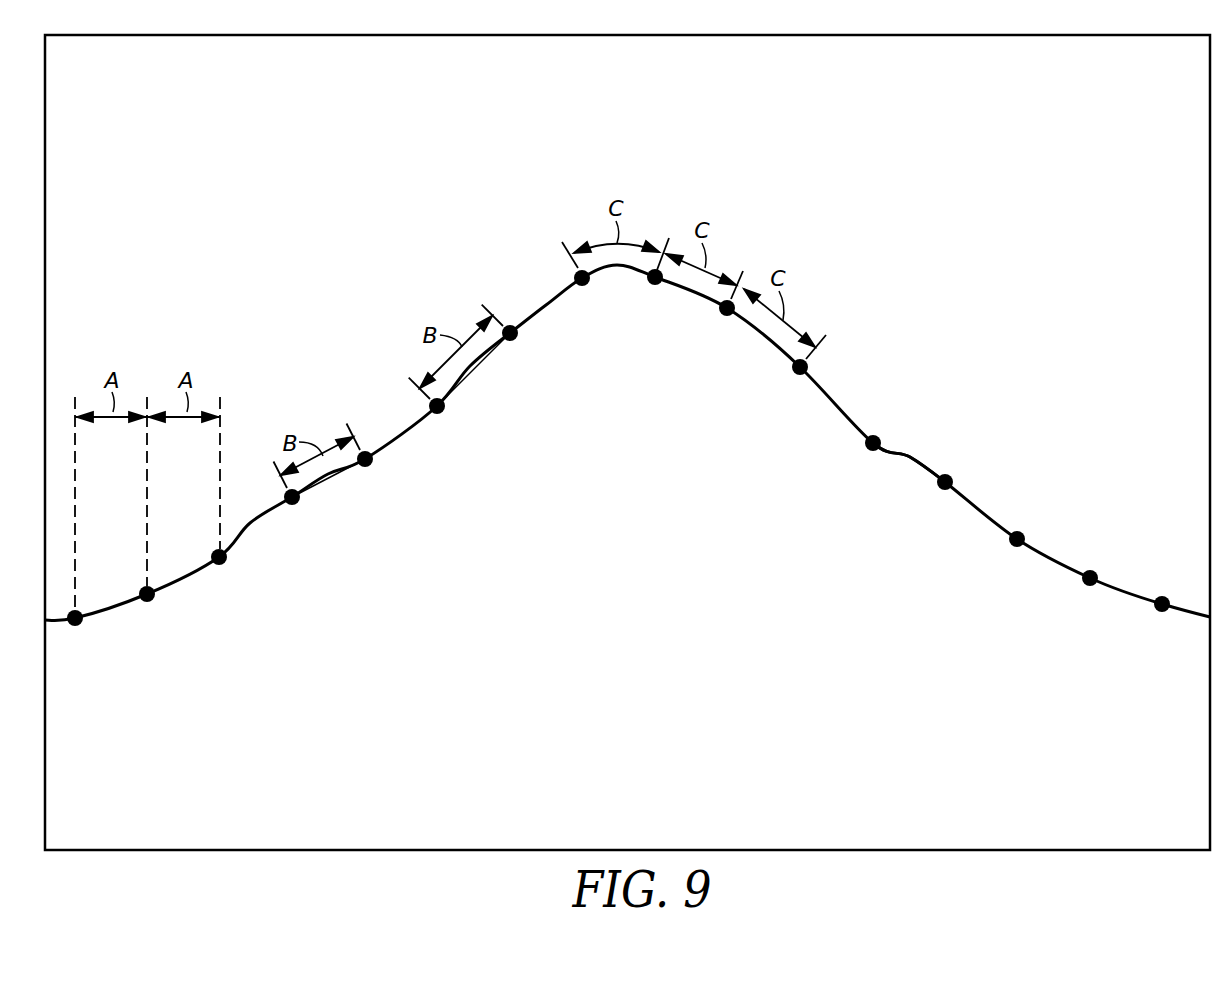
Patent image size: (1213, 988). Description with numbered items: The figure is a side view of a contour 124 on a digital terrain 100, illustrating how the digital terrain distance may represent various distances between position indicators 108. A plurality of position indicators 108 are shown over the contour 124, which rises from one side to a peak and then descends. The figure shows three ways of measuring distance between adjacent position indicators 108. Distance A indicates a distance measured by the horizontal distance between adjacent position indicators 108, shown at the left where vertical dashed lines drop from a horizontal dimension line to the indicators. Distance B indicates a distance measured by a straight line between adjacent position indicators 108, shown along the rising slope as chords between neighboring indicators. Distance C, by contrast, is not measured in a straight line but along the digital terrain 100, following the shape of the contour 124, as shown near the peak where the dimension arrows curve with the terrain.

The digital terrain 100 is at (1155, 682).
The position indicators 108 is at (221, 566).
The contour 124 is at (920, 459).